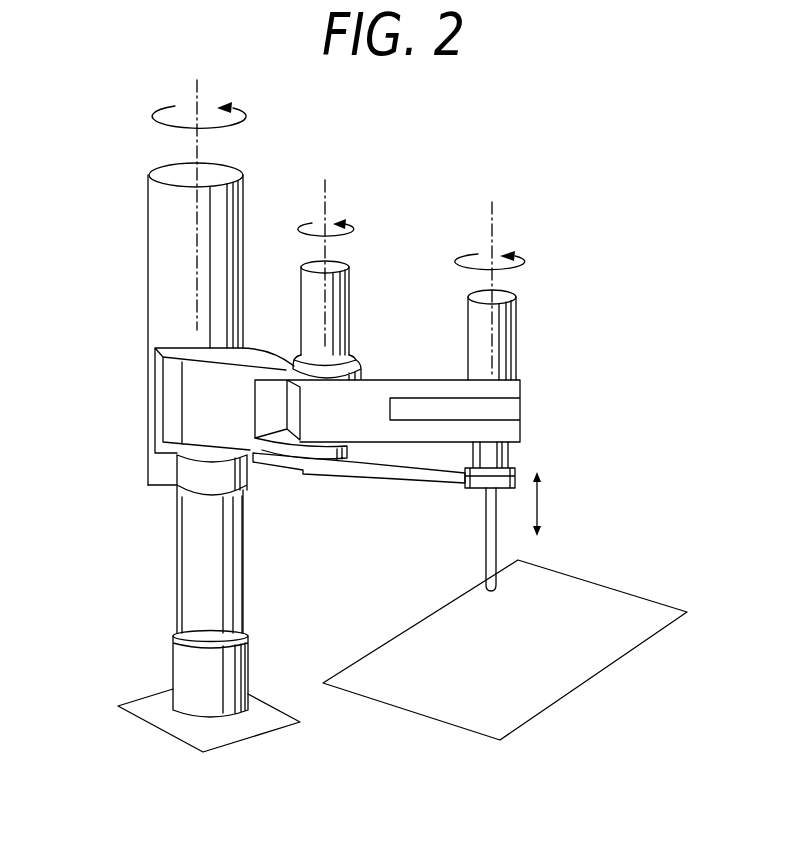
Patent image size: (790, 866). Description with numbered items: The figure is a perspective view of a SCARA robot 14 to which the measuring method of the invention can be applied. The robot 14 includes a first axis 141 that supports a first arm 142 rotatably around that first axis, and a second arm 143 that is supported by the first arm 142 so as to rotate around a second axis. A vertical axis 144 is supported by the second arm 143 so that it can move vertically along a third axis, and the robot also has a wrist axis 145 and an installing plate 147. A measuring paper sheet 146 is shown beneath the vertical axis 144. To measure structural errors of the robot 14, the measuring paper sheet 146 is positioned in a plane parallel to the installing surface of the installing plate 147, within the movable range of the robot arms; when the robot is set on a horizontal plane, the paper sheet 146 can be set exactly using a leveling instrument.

The robot 14 is at (140, 304).
The first axis 141 is at (185, 537).
The first arm 142 is at (268, 358).
The second arm 143 is at (520, 387).
The vertical axis 144 is at (497, 548).
The wrist axis 145 is at (508, 452).
The measuring paper sheet 146 is at (583, 658).
The installing plate 147 is at (173, 722).